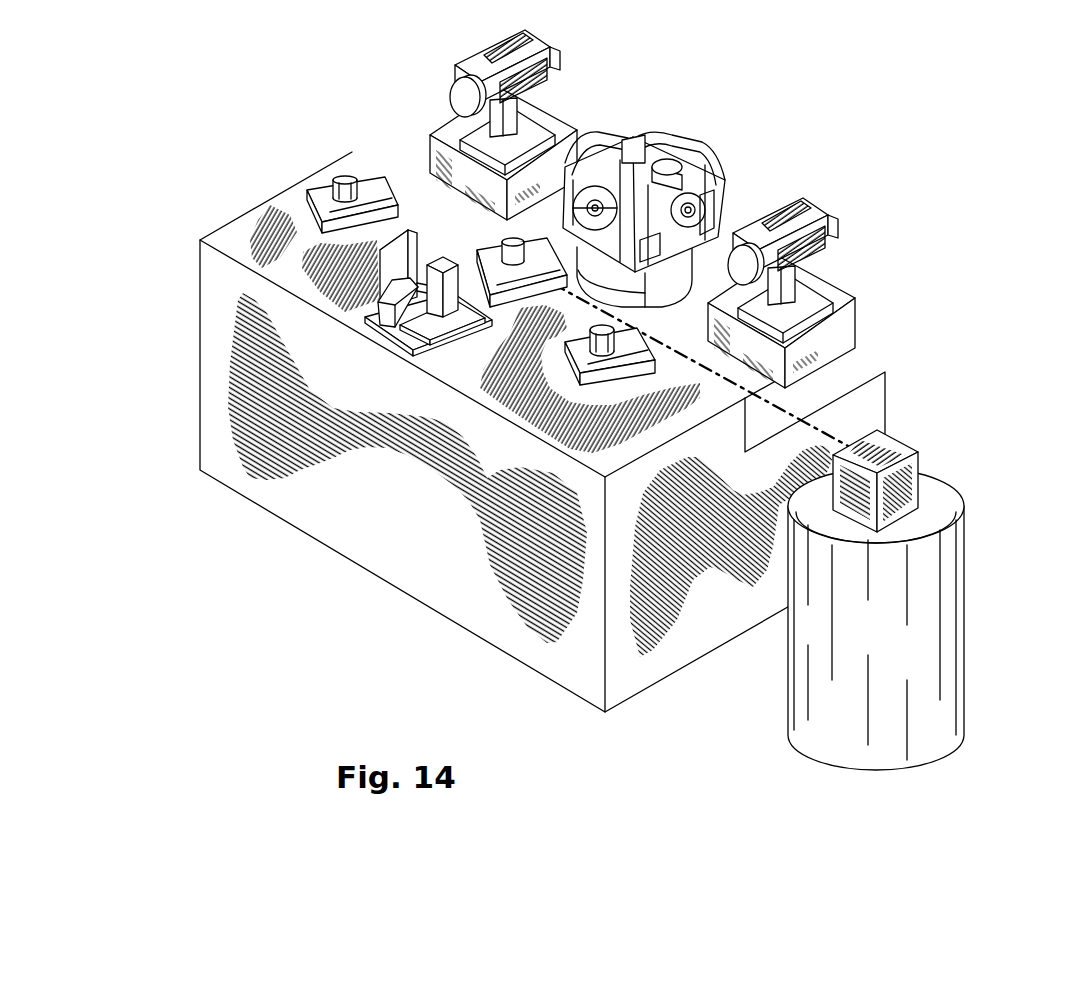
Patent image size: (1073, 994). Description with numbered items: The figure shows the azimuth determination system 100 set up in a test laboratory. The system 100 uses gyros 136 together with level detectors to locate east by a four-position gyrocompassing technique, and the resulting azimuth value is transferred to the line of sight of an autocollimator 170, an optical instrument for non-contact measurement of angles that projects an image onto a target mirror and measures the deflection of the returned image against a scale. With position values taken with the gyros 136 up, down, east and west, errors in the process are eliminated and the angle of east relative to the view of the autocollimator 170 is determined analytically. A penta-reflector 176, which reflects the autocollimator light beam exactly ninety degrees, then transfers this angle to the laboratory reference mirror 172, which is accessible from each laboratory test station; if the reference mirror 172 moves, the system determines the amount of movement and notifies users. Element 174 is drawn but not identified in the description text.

The azimuth determination system 100 is at (619, 400).
The gyros 136 is at (650, 112).
The autocollimator 170 is at (425, 333).
The laboratory reference mirror 172 is at (893, 445).
The cylindrical stand 174 is at (965, 637).
The penta-reflector 176 is at (500, 242).